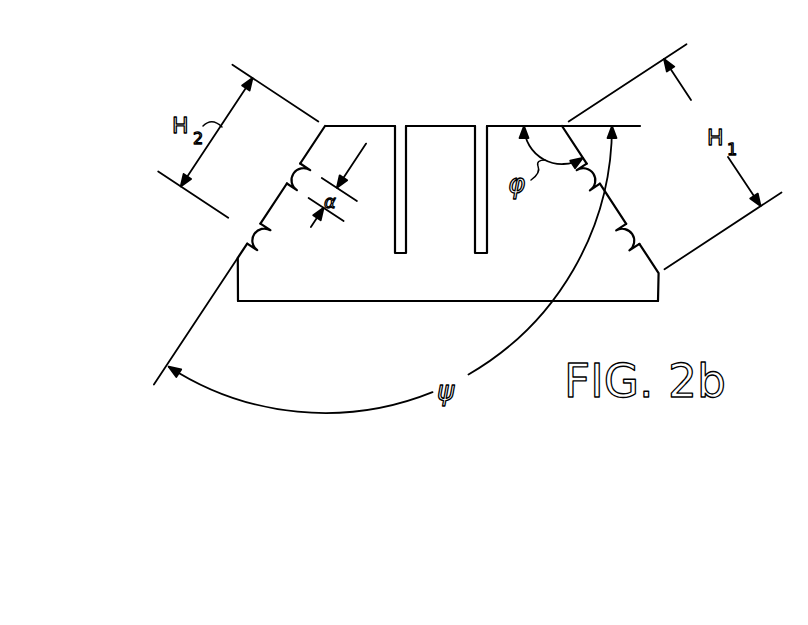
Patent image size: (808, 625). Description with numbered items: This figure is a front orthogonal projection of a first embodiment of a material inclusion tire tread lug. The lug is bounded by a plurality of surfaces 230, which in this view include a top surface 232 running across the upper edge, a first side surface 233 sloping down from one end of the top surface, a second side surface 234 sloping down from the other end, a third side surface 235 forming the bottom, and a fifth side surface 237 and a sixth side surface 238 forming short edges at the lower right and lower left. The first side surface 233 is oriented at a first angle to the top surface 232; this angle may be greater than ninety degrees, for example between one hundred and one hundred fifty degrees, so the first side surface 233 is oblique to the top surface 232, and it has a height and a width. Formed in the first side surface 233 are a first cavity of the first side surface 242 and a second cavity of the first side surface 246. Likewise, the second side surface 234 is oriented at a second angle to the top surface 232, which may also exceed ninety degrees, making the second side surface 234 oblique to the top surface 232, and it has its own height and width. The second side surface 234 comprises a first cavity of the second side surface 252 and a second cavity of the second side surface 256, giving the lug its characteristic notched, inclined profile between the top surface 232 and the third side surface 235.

The surfaces 230 is at (371, 113).
The top surface 232 is at (503, 112).
The first cavity of the first side surface 242 is at (590, 165).
The first side surface 233 is at (630, 192).
The second cavity of the first side surface 246 is at (638, 230).
The fifth side surface 237 is at (672, 291).
The third side surface 235 is at (328, 283).
The first cavity of the second side surface 252 is at (291, 166).
The second side surface 234 is at (250, 203).
The second cavity of the second side surface 256 is at (245, 228).
The sixth side surface 238 is at (225, 284).